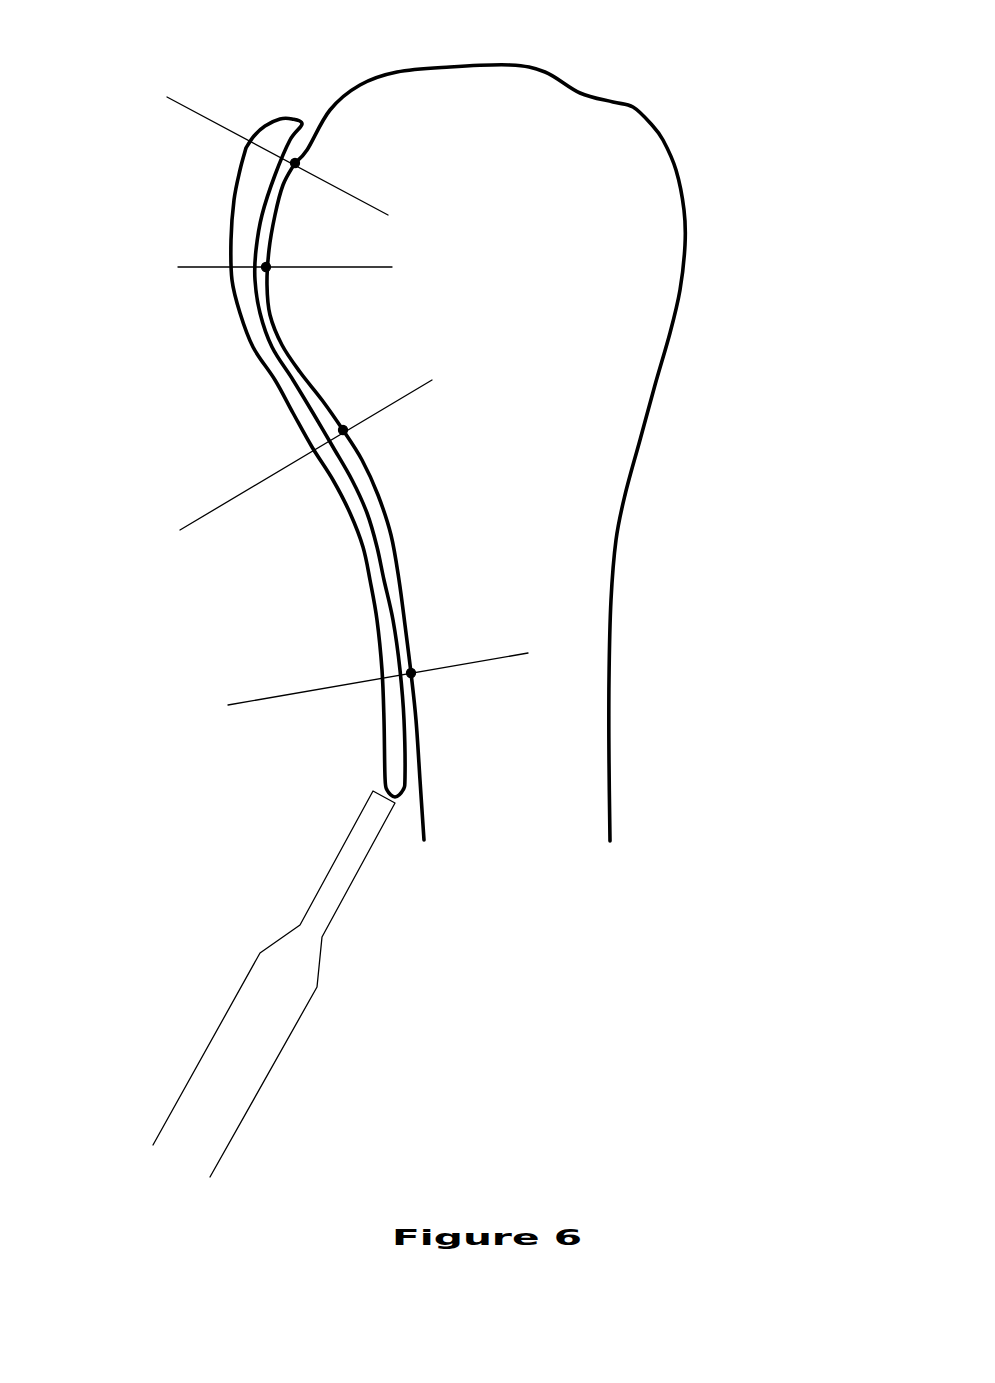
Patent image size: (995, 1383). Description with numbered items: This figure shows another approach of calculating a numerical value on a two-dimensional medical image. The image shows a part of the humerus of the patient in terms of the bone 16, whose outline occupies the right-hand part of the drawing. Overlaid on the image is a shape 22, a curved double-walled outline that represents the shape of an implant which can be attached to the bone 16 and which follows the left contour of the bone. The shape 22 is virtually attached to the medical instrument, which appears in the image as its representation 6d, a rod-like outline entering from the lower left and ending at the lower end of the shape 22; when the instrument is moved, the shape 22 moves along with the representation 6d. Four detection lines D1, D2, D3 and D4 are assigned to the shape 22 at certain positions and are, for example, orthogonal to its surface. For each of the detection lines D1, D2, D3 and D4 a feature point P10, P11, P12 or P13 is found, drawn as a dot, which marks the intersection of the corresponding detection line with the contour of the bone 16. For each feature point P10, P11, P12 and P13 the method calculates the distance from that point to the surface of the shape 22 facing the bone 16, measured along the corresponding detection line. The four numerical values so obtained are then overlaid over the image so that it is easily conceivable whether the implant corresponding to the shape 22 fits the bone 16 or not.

The bone 16 is at (685, 245).
The shape 22 is at (372, 611).
The representation of the medical instrument 6d is at (242, 985).
The feature point P10 is at (295, 163).
The feature point P11 is at (266, 267).
The feature point P12 is at (343, 430).
The feature point P13 is at (411, 673).
The detection line D1 is at (197, 110).
The detection line D2 is at (178, 267).
The detection line D3 is at (215, 503).
The detection line D4 is at (270, 698).